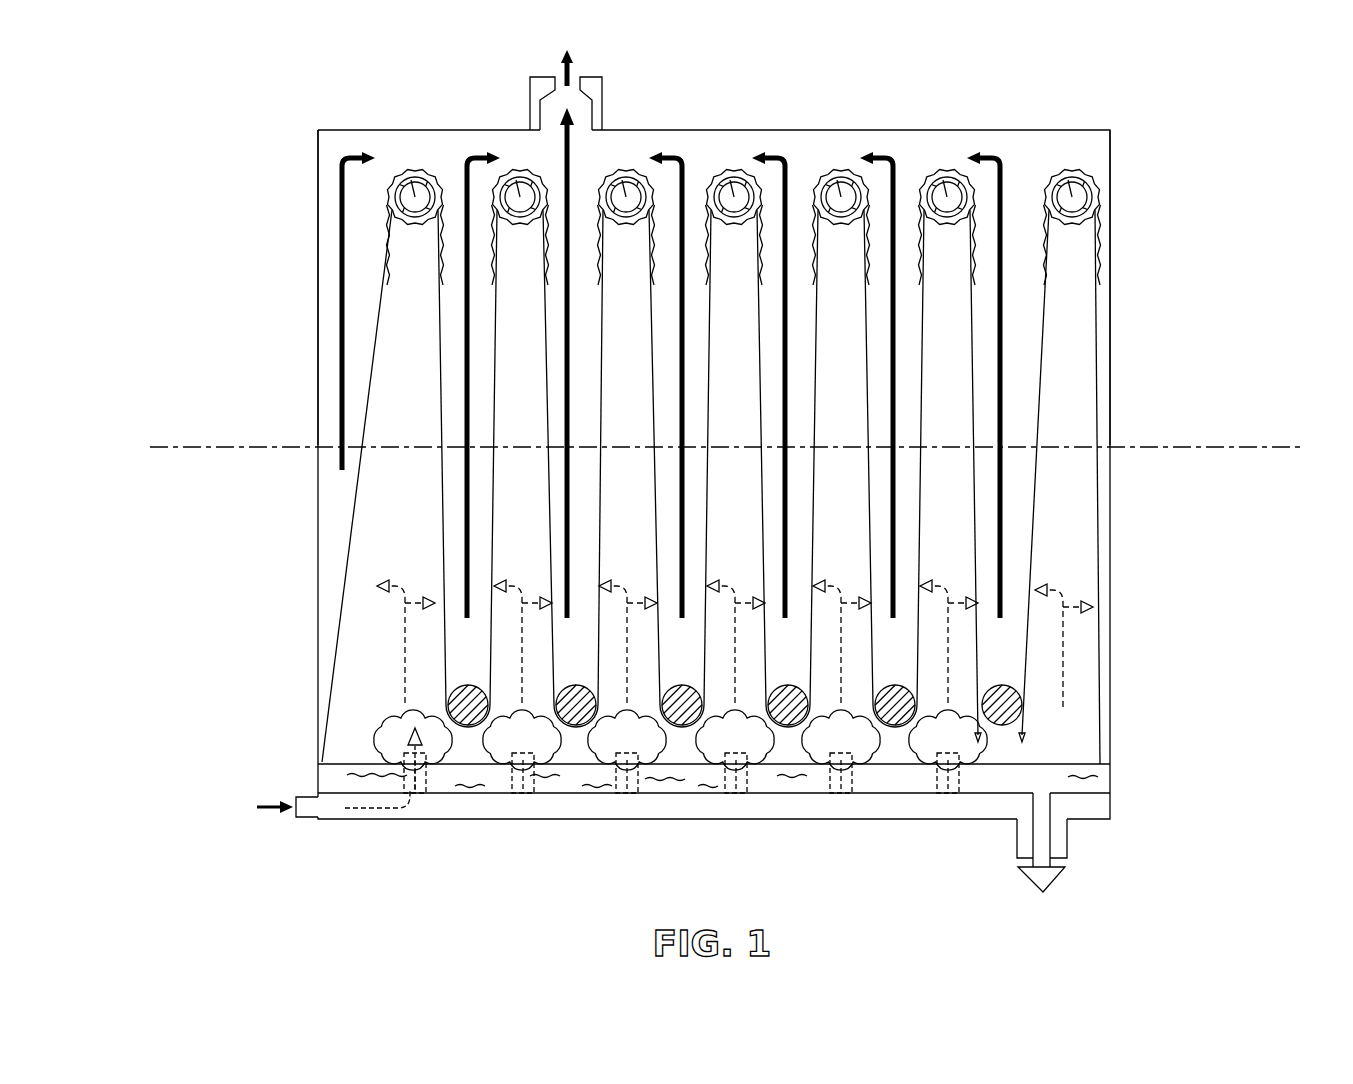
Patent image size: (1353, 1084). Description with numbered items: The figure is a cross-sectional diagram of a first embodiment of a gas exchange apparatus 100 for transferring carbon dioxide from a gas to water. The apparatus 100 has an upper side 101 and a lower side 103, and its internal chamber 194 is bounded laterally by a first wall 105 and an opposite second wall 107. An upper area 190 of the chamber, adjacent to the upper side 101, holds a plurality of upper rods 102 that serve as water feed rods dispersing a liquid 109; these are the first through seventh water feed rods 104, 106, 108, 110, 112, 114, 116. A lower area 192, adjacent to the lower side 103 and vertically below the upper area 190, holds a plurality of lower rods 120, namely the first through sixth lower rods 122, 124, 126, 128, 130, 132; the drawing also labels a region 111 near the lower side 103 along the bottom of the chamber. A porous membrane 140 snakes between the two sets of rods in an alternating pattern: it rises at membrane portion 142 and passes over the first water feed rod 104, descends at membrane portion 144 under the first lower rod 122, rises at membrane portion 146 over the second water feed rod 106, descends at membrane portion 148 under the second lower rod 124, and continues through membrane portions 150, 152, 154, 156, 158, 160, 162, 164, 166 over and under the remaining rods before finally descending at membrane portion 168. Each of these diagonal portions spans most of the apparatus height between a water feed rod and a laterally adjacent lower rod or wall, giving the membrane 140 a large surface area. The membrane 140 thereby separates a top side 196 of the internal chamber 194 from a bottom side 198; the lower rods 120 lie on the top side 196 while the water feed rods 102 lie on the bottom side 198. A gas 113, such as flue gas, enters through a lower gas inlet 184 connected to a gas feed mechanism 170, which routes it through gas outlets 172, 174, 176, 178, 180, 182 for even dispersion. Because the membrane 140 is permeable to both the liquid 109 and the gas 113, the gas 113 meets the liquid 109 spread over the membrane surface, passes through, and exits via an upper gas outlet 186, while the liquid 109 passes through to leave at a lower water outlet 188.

The gas exchange apparatus 100 is at (187, 183).
The upper side 101 is at (908, 125).
The plurality of upper rods 102 is at (1123, 192).
The lower side 103 is at (912, 828).
The first water feed rod 104 is at (422, 215).
The first wall 105 is at (310, 315).
The second water feed rod 106 is at (517, 197).
The second wall 107 is at (1113, 265).
The third water feed rod 108 is at (622, 197).
The liquid 109 is at (392, 200).
The fourth water feed rod 110 is at (735, 197).
The liquid reservoir 111 is at (1112, 785).
The fifth water feed rod 112 is at (836, 197).
The gas 113 is at (388, 714).
The sixth water feed rod 114 is at (950, 197).
The seventh water feed rod 116 is at (1072, 197).
The plurality of lower rods 120 is at (1030, 700).
The first lower rod 122 is at (465, 712).
The second lower rod 124 is at (574, 712).
The third lower rod 126 is at (682, 712).
The fourth lower rod 128 is at (789, 712).
The fifth lower rod 130 is at (895, 712).
The sixth lower rod 132 is at (1003, 712).
The porous membrane 140 is at (1107, 435).
The membrane portion 142 is at (352, 530).
The membrane portion 144 is at (440, 548).
The membrane portion 146 is at (497, 367).
The membrane portion 148 is at (545, 403).
The membrane portion 150 is at (600, 462).
The membrane portion 152 is at (657, 473).
The membrane portion 154 is at (711, 473).
The membrane portion 156 is at (760, 458).
The membrane portion 158 is at (815, 417).
The membrane portion 160 is at (867, 392).
The membrane portion 162 is at (924, 358).
The membrane portion 164 is at (973, 319).
The membrane portion 166 is at (1038, 417).
The membrane portion 168 is at (1097, 369).
The gas feed mechanism 170 is at (403, 836).
The gas outlet 172 is at (421, 786).
The gas outlet 174 is at (524, 786).
The gas outlet 176 is at (627, 786).
The gas outlet 178 is at (736, 786).
The gas outlet 180 is at (841, 786).
The gas outlet 182 is at (948, 786).
The lower gas inlet 184 is at (312, 797).
The upper gas outlet 186 is at (528, 100).
The lower water outlet 188 is at (1068, 828).
The upper area 190 is at (1230, 313).
The lower area 192 is at (1228, 628).
The internal chamber 194 is at (327, 377).
The top side 196 is at (1053, 165).
The bottom side 198 is at (1086, 747).